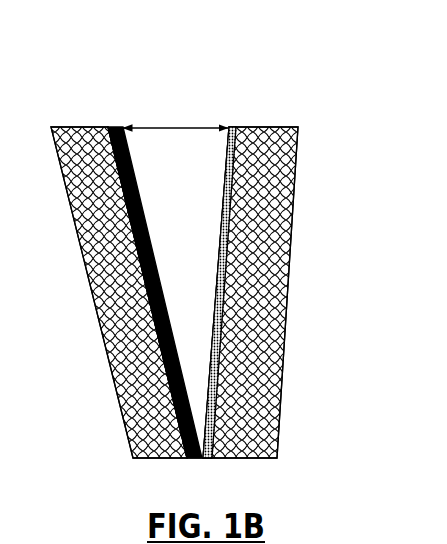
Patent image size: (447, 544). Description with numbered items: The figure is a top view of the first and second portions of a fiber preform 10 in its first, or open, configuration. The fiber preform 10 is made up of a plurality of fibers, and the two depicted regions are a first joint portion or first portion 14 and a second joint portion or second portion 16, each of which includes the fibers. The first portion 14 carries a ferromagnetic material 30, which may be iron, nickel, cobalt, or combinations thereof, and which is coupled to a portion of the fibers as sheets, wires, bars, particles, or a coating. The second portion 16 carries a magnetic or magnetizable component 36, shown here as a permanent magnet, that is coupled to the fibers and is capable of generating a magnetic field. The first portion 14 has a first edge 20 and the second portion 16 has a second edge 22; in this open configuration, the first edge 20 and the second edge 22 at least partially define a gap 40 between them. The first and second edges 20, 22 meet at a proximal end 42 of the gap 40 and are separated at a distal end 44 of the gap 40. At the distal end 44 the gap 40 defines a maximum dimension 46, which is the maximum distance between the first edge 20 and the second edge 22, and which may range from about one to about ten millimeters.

The fiber preform 10 is at (191, 257).
The first portion 14 is at (270, 286).
The second portion 16 is at (109, 302).
The first edge 20 is at (217, 360).
The second edge 22 is at (165, 319).
The ferromagnetic material 30 is at (230, 207).
The magnetic or magnetizable component 36 is at (127, 228).
The gap 40 is at (190, 173).
The proximal end 42 is at (203, 461).
The distal end 44 is at (157, 106).
The maximum dimension 46 is at (183, 127).